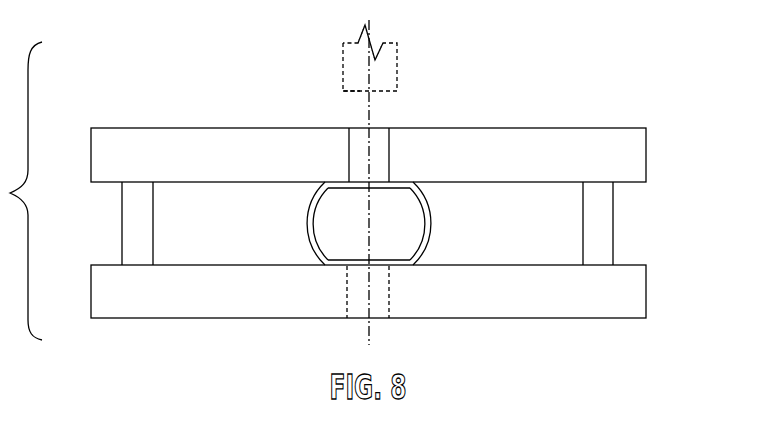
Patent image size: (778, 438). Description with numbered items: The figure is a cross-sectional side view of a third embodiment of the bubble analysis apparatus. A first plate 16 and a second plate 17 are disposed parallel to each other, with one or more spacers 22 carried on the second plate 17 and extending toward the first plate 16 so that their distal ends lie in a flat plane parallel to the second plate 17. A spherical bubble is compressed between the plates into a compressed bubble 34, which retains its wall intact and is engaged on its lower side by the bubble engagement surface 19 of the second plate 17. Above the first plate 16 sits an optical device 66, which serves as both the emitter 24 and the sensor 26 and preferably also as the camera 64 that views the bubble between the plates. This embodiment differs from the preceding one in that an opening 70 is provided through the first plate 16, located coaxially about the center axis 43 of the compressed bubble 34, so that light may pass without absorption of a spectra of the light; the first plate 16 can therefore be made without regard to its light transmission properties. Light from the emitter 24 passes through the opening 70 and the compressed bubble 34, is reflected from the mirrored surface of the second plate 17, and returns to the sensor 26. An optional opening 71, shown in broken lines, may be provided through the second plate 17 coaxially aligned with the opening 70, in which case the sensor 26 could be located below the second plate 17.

The first plate 16 is at (565, 146).
The second plate 17 is at (541, 306).
The bubble engagement surface 19 is at (465, 264).
The spacer 22 is at (616, 222).
The emitter 24 is at (392, 77).
The sensor 26 is at (356, 55).
The compressed bubble 34 is at (304, 216).
The center axis 43 is at (369, 325).
The camera 64 is at (349, 88).
The optical device 66 is at (398, 59).
The opening 70 is at (385, 146).
The optional opening 71 is at (352, 290).